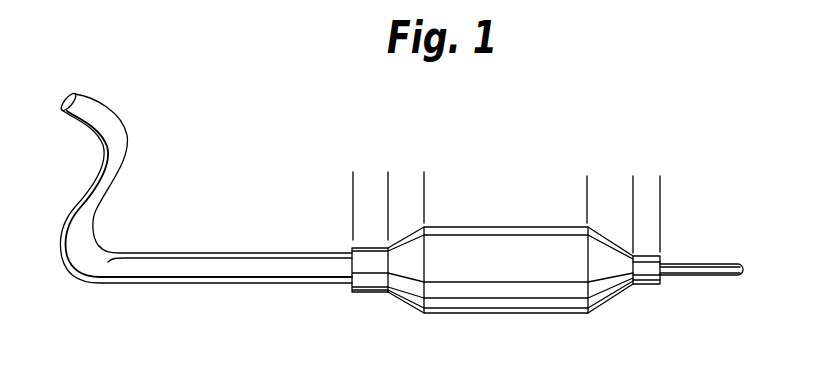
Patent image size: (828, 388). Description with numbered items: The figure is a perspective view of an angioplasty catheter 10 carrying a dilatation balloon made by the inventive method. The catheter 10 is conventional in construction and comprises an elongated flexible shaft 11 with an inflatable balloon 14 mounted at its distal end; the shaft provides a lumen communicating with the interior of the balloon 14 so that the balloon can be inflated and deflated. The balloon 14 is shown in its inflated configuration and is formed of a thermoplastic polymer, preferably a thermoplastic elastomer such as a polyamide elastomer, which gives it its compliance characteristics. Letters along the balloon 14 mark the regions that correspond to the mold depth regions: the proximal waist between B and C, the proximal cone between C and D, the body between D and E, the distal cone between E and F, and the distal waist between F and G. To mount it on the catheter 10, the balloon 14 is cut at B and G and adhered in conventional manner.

The catheter 10 is at (304, 210).
The elongated flexible shaft 11 is at (258, 283).
The inflatable balloon 14 is at (510, 240).